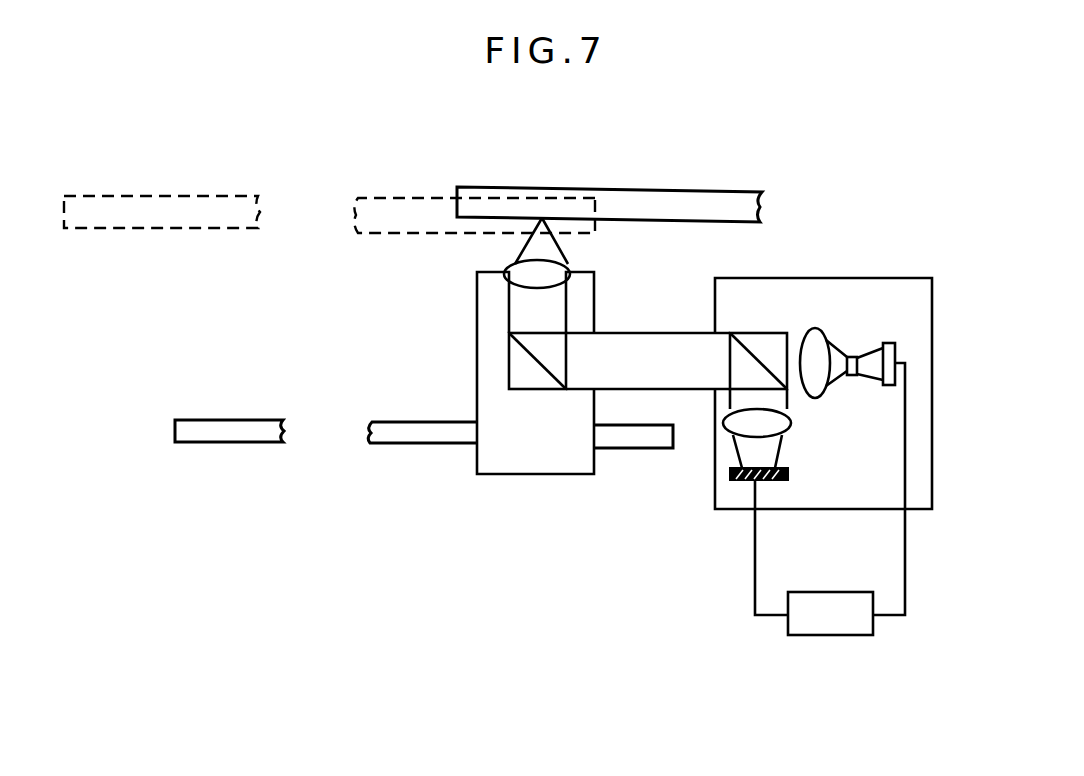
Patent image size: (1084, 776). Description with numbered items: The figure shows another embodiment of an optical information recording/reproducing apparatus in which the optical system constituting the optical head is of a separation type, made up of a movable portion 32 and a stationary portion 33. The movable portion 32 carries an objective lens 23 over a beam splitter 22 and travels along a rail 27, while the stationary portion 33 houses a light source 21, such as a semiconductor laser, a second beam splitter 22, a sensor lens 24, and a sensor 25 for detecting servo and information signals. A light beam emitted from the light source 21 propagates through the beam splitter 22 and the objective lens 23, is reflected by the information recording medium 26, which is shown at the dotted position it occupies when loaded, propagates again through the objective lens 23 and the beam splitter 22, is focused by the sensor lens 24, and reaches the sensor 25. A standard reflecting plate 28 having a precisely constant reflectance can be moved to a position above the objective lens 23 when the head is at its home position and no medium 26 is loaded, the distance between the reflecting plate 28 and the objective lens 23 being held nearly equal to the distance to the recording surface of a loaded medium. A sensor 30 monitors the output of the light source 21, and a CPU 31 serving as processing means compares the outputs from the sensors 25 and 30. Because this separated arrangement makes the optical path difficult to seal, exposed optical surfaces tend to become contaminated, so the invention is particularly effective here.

The light source 21 is at (847, 357).
The beam splitter 22 is at (510, 355).
The objective lens 23 is at (505, 277).
The sensor lens 24 is at (730, 427).
The sensor 25 is at (747, 482).
The information recording medium 26 is at (425, 198).
The rail 27 is at (447, 448).
The standard reflecting plate 28 is at (660, 187).
The sensor 30 is at (890, 343).
The CPU 31 is at (853, 637).
The movable portion 32 is at (523, 477).
The stationary portion 33 is at (760, 278).